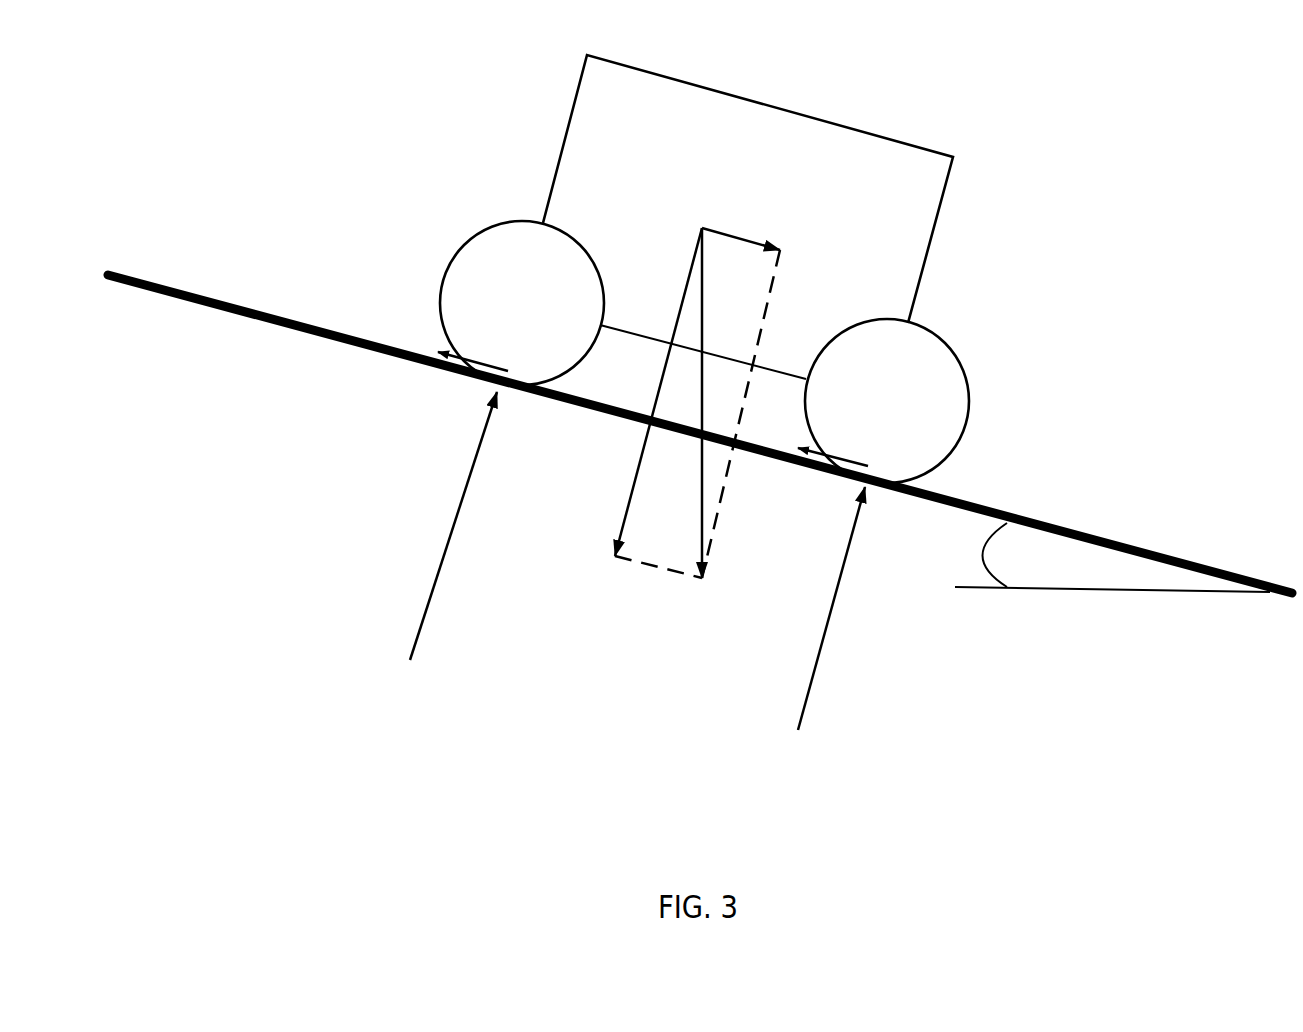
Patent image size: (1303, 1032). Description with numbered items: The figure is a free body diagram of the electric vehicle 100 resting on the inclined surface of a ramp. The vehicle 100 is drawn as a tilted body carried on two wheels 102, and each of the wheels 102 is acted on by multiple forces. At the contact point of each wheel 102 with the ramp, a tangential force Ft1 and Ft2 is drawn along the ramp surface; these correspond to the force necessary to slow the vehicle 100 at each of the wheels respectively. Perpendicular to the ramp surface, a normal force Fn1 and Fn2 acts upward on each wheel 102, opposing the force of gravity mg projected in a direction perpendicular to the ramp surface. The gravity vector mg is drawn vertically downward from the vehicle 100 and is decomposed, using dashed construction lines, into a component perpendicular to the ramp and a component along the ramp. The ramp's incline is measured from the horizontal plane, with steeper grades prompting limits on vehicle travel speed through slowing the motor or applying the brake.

The vehicle 100 is at (720, 97).
The wheels 102 is at (488, 237).
The force of gravity mg is at (697, 425).
The normal force Fn1 is at (468, 526).
The normal force Fn2 is at (847, 608).
The tangential force Ft1 is at (459, 348).
The tangential force Ft2 is at (819, 443).